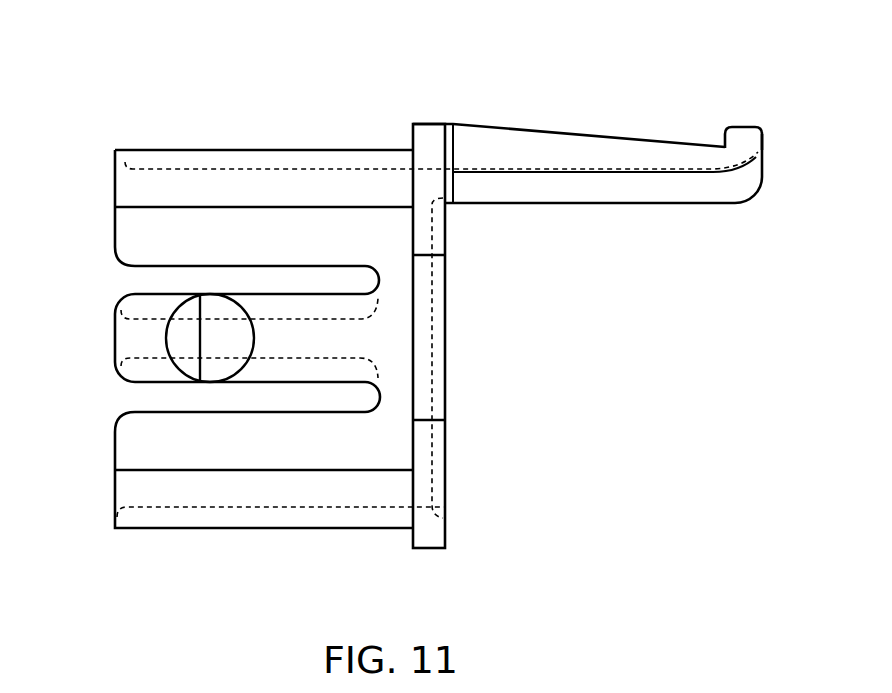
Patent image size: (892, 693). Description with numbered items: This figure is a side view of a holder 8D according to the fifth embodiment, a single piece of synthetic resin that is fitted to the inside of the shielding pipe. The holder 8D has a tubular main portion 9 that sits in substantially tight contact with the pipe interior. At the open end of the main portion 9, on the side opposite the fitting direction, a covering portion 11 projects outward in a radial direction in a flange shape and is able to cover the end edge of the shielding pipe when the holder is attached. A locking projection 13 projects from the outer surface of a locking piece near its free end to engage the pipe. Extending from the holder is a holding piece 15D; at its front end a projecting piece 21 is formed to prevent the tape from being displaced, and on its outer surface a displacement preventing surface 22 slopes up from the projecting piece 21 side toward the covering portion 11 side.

The main portion 9 is at (228, 493).
The covering portion 11 is at (425, 136).
The locking projection 13 is at (218, 341).
The holding piece 15D is at (655, 190).
The projecting piece 21 is at (750, 133).
The displacement preventing surface 22 is at (585, 140).
The holder 8D is at (537, 322).